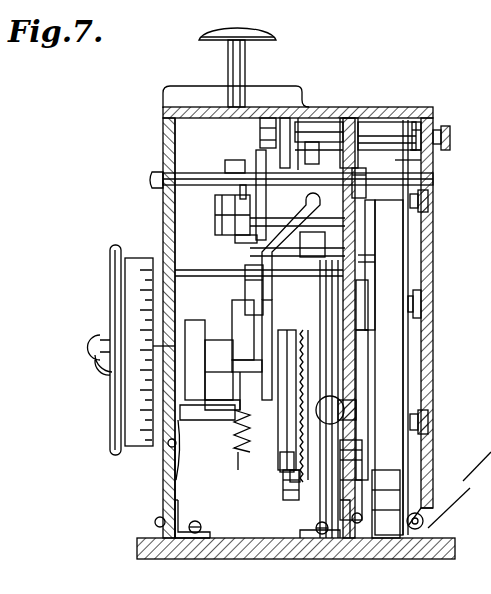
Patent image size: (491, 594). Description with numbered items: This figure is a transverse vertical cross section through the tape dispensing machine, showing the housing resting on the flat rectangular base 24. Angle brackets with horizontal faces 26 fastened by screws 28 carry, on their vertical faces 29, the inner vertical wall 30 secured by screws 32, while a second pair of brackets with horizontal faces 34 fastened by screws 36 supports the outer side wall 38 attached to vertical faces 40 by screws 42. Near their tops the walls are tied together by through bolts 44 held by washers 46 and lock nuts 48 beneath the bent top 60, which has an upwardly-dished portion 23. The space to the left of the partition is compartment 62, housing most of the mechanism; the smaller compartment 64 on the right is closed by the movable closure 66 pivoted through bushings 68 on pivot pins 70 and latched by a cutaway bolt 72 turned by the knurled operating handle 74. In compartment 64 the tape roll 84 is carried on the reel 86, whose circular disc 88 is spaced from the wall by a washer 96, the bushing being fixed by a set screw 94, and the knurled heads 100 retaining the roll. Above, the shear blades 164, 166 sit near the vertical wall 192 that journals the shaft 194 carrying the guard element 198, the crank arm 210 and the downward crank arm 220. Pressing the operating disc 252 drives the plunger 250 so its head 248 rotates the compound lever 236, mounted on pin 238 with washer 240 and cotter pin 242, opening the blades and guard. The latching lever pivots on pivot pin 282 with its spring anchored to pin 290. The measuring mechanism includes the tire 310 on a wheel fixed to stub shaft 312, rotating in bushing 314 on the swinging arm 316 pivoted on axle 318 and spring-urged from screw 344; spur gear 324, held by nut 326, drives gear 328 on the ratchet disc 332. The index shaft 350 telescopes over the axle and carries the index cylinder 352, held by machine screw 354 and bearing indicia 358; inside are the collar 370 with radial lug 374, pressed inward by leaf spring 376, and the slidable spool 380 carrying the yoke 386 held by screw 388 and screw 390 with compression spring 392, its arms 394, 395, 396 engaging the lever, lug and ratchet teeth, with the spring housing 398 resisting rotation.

The upwardly-dished portion 23 is at (200, 92).
The base 24 is at (255, 556).
The horizontal faces 26 is at (328, 538).
The screws 28 is at (316, 527).
The vertical faces 29 is at (342, 505).
The inner vertical wall 30 is at (352, 120).
The screws 32 is at (360, 514).
The horizontal faces 34 is at (195, 540).
The screws 36 is at (200, 524).
The outer vertical side wall 38 is at (163, 475).
The vertical bracket faces 40 is at (180, 518).
The screws 42 is at (155, 522).
The through bolts 44 is at (165, 170).
The washers 46 is at (336, 188).
The lock nuts 48 is at (364, 192).
The top 60 is at (172, 110).
The compartment 62 is at (187, 222).
The second compartment 64 is at (412, 252).
The movable closure 66 is at (433, 347).
The bushings 68 is at (449, 490).
The pivot pins 70 is at (415, 530).
The cutaway bolt 72 is at (425, 128).
The knurled operating handle 74 is at (450, 142).
The roll of pressure-sensitive adhesive tape 84 is at (400, 383).
The reel 86 is at (370, 255).
The circular disc 88 is at (370, 378).
The set screw 94 is at (422, 302).
The washer 96 is at (360, 330).
The knurled heads 100 is at (430, 198).
The shear blade 164 is at (412, 170).
The shear blade 166 is at (425, 158).
The vertical wall 192 is at (286, 118).
The shaft 194 is at (322, 124).
The guard element 198 is at (390, 122).
The crank arm 210 is at (268, 118).
The crank arm 220 is at (349, 118).
The compound lever 236 is at (259, 195).
The pin 238 is at (216, 208).
The washer 240 is at (236, 240).
The cotter pin 242 is at (238, 192).
The head 248 is at (230, 164).
The plunger 250 is at (246, 64).
The operating disc 252 is at (266, 30).
The pivot pin 282 is at (265, 246).
The pin 290 is at (320, 280).
The tire 310 is at (386, 538).
The stub shaft 312 is at (280, 472).
The bushing 314 is at (369, 480).
The swinging arm 316 is at (358, 370).
The axle 318 is at (170, 446).
The spur gear 324 is at (296, 497).
The nut 326 is at (290, 480).
The gear 328 is at (304, 340).
The ratchet disc 332 is at (280, 458).
The screw 344 is at (345, 410).
The index shaft 350 is at (150, 352).
The index cylinder 352 is at (110, 425).
The machine screw 354 is at (98, 338).
The indicia 358 is at (108, 370).
The collar 370 is at (195, 320).
The radial lug 374 is at (207, 418).
The leaf spring 376 is at (178, 456).
The spool 380 is at (233, 310).
The yoke 386 is at (243, 340).
The screw 388 is at (246, 283).
The screw 390 is at (222, 456).
The compression spring 392 is at (236, 440).
The arm 394 is at (245, 368).
The arm 395 is at (221, 408).
The arm 396 is at (268, 365).
The housing 398 is at (254, 425).